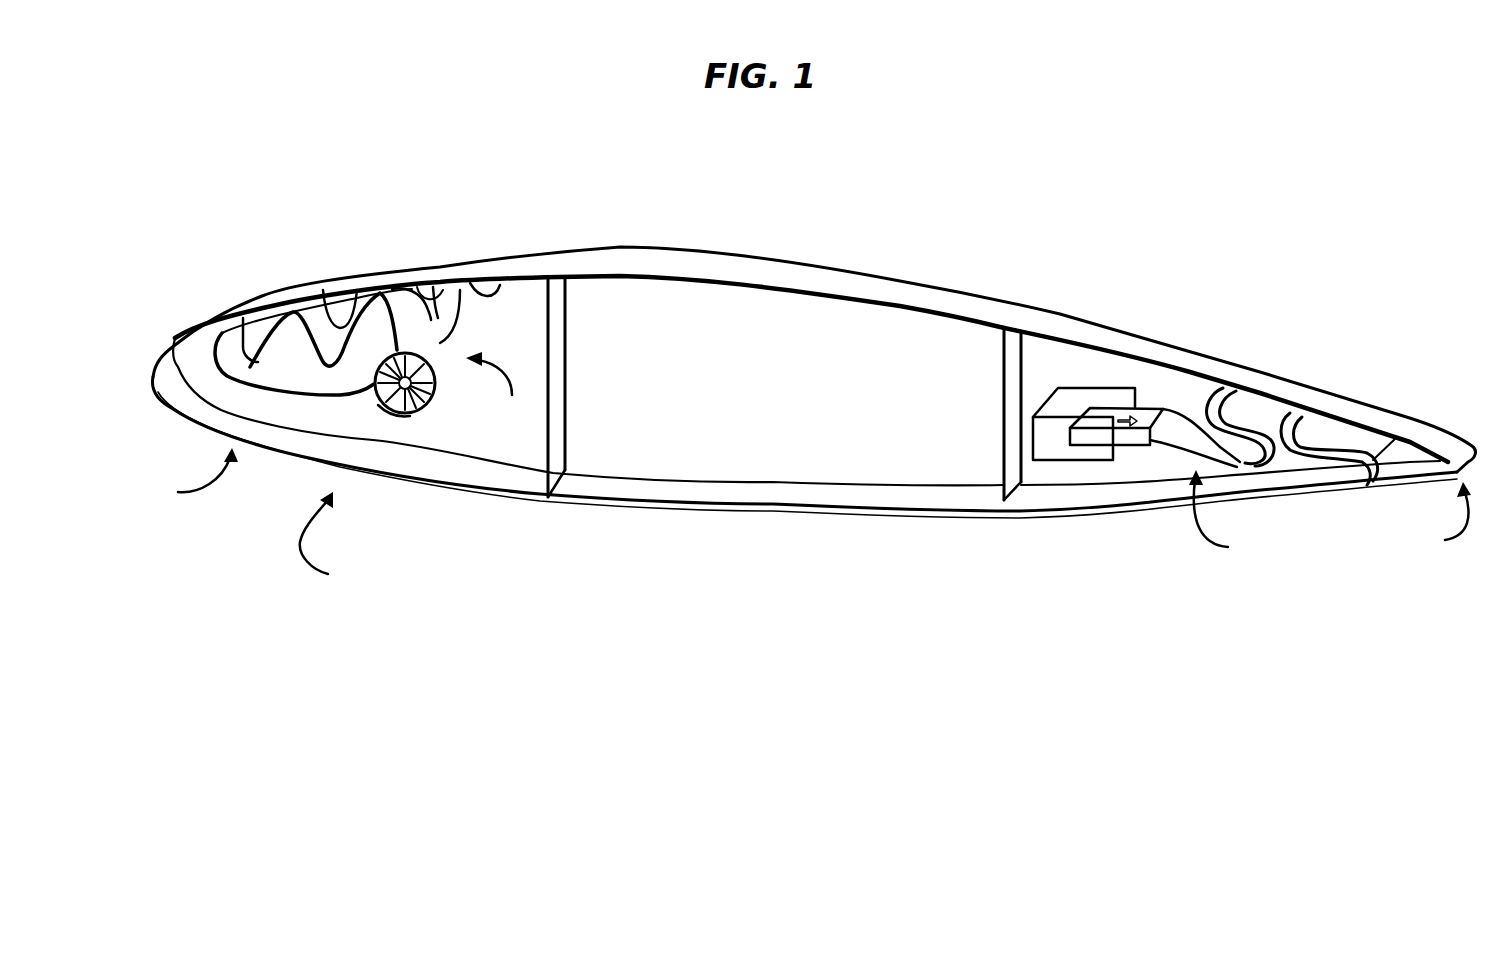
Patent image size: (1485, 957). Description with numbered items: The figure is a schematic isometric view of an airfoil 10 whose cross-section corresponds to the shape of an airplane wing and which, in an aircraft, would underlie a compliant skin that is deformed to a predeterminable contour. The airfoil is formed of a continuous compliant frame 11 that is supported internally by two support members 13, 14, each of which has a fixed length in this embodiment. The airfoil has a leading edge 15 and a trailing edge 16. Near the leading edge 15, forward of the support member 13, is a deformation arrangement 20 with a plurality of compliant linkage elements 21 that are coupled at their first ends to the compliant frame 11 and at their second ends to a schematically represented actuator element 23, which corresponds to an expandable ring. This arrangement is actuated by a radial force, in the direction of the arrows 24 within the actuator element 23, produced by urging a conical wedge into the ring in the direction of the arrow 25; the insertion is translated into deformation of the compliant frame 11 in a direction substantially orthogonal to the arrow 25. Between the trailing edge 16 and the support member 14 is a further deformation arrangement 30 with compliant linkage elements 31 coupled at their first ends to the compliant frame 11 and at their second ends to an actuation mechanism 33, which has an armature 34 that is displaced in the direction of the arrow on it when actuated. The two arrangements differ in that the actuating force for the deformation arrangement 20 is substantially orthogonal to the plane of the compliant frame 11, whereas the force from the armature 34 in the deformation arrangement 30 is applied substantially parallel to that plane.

The airfoil 10 is at (813, 390).
The compliant frame 11 is at (813, 375).
The support member 13 is at (597, 387).
The support member 14 is at (979, 414).
The leading edge 15 is at (196, 476).
The trailing edge 16 is at (1445, 516).
The deformation arrangement 20 is at (497, 387).
The compliant linkage elements 21 is at (368, 359).
The actuator element 23 is at (432, 400).
The arrows 24 is at (397, 461).
The arrow 25 is at (329, 539).
The deformation arrangement 30 is at (1201, 485).
The compliant linkage elements 31 is at (1302, 428).
The actuation mechanism 33 is at (1084, 404).
The armature 34 is at (1116, 486).